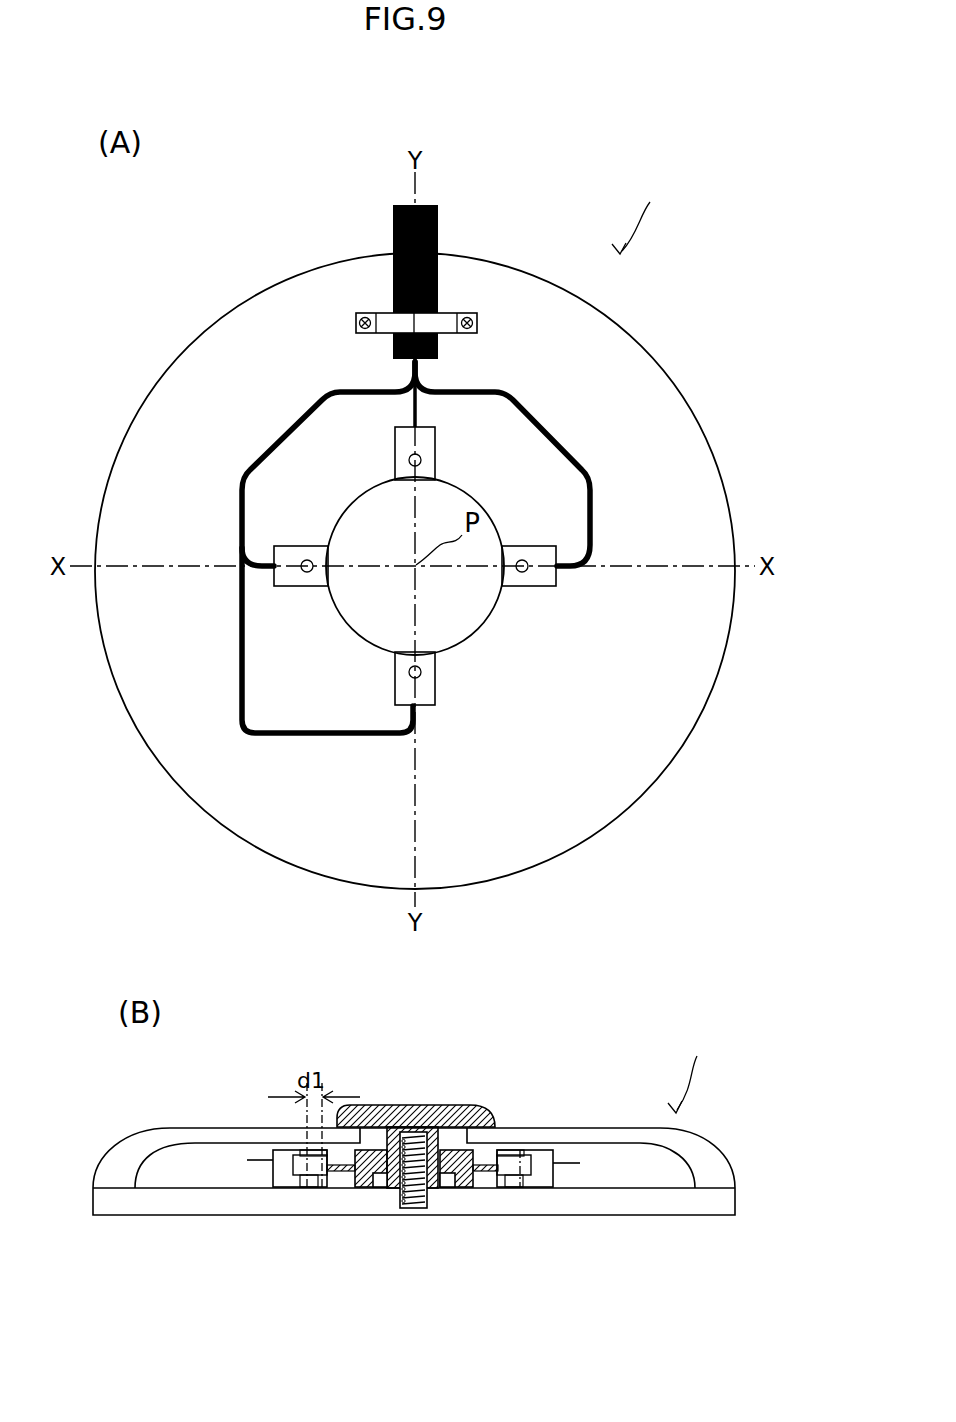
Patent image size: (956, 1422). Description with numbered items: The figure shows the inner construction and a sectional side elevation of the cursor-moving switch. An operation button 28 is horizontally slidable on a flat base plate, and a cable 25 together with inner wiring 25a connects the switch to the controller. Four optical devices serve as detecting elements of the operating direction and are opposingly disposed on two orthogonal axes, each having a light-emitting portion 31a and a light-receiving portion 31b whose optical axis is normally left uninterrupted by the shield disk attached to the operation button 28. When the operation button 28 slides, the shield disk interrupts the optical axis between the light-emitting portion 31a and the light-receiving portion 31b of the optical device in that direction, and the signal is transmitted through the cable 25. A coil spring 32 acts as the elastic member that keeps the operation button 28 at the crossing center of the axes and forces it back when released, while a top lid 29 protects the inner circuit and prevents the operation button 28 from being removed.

The cable 25 is at (393, 232).
The inner wiring 25a is at (289, 430).
The operation button 28 is at (458, 1108).
The top lid 29 is at (693, 1148).
The light-emitting portion 31a is at (520, 1150).
The light-receiving portion 31b is at (525, 1185).
The coil spring 32 is at (395, 1197).